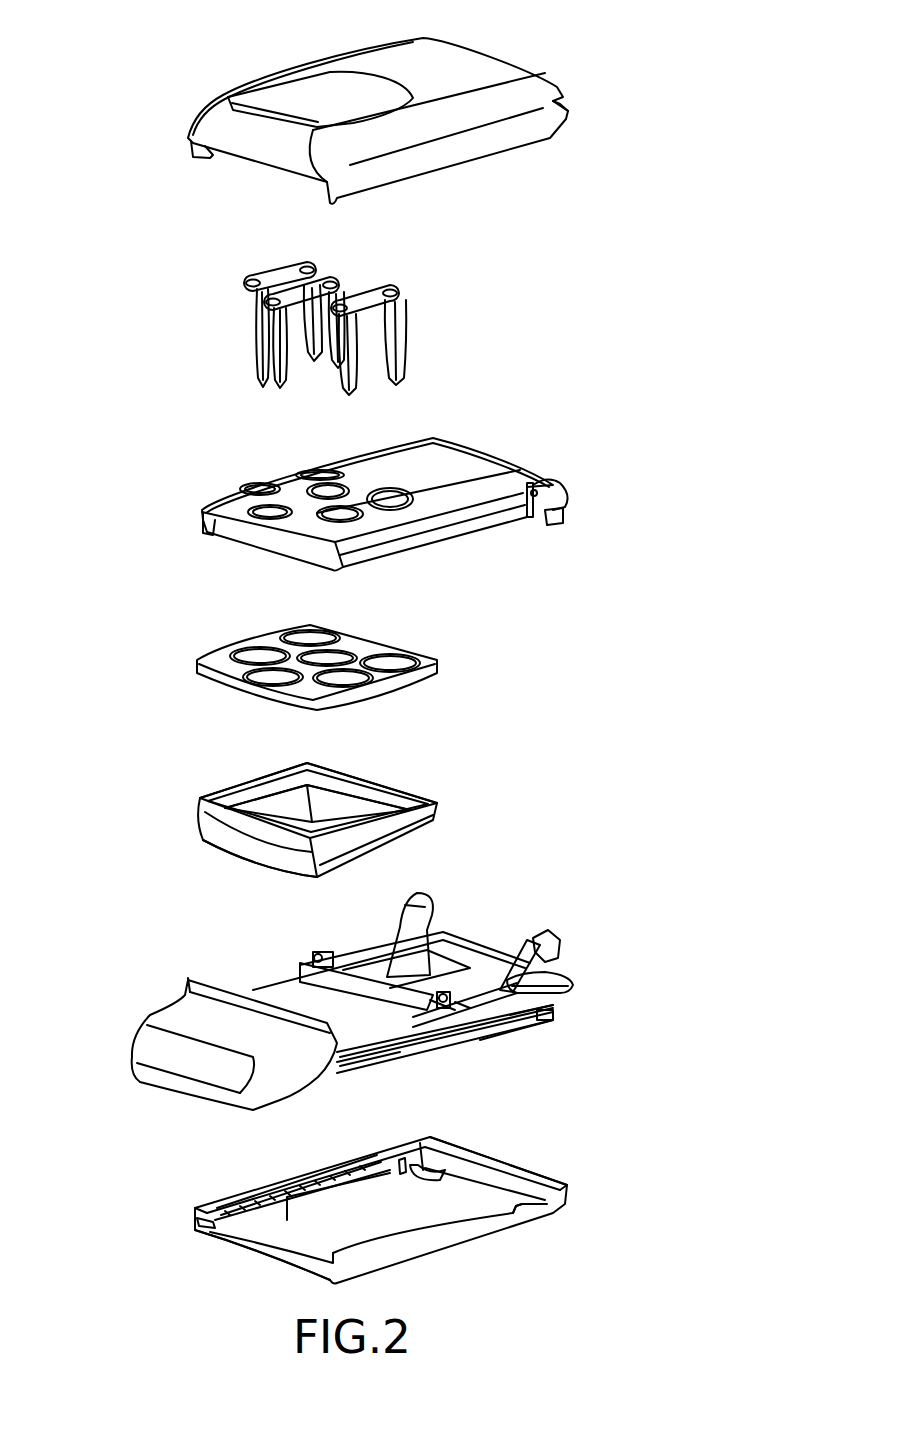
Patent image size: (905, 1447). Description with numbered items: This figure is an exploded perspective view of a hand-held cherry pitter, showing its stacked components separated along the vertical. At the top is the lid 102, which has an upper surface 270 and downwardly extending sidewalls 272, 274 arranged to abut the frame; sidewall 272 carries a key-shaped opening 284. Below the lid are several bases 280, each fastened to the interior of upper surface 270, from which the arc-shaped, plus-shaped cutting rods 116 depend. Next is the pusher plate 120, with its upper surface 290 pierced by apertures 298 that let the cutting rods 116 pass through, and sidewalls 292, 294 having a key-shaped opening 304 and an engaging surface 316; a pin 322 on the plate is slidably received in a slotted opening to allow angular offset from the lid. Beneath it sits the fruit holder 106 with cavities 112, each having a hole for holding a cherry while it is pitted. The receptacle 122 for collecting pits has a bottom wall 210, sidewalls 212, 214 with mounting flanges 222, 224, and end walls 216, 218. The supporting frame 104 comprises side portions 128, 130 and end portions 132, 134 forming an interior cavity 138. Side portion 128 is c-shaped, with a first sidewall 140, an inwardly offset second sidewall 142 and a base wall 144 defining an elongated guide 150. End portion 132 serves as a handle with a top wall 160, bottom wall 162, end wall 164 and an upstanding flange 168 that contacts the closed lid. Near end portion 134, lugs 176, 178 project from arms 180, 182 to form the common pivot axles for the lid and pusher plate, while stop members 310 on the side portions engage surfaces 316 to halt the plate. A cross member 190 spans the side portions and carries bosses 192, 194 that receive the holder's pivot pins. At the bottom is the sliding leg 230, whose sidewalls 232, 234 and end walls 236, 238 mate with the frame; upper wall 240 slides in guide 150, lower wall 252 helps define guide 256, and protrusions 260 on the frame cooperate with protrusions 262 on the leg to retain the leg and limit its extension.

The lid 102 is at (470, 62).
The supporting frame 104 is at (277, 990).
The fruit holder 106 is at (407, 680).
The cavity 112 is at (407, 657).
The cutting rod 116 is at (257, 338).
The pusher plate 120 is at (467, 462).
The receptacle 122 is at (217, 837).
The side portion 128 is at (473, 1017).
The side portion 130 is at (360, 963).
The end portion 132 is at (197, 1073).
The end portion 134 is at (500, 950).
The interior cavity 138 is at (453, 1007).
The first sidewall 140 is at (460, 1003).
The second sidewall 142 is at (530, 1023).
The base wall 144 is at (510, 1033).
The guide 150 is at (387, 1057).
The top wall 160 is at (173, 1017).
The bottom wall 162 is at (200, 1103).
The end wall 164 is at (143, 1050).
The flange 168 is at (187, 980).
The lug 176 is at (555, 947).
The lug 178 is at (410, 900).
The arm 180 is at (533, 970).
The arm 182 is at (420, 923).
The cross member 190 is at (347, 997).
The boss 192 is at (447, 992).
The boss 194 is at (320, 952).
The bottom wall 210 is at (323, 823).
The sidewall 212 is at (423, 837).
The sidewall 214 is at (265, 807).
The end wall 216 is at (257, 847).
The end wall 218 is at (387, 807).
The mounting flange 222 is at (433, 810).
The mounting flange 224 is at (223, 793).
The leg 230 is at (445, 1232).
The sidewall 232 is at (480, 1222).
The sidewall 234 is at (280, 1183).
The end wall 236 is at (513, 1163).
The end wall 238 is at (260, 1257).
The upper wall 240 is at (407, 1200).
The lower wall 252 is at (340, 1200).
The guide 256 is at (287, 1207).
The protrusion 260 is at (540, 1018).
The protrusion 262 is at (412, 1178).
The upper surface 270 is at (380, 58).
The sidewall 272 is at (487, 140).
The sidewall 274 is at (208, 156).
The base 280 is at (262, 278).
The key-shaped opening 284 is at (570, 120).
The upper surface 290 is at (413, 457).
The sidewall 292 is at (457, 533).
The sidewall 294 is at (223, 523).
The aperture 298 is at (263, 488).
The key-shaped opening 304 is at (555, 523).
The stop member 310 is at (520, 987).
The engaging surface 316 is at (565, 500).
The pin 322 is at (537, 492).